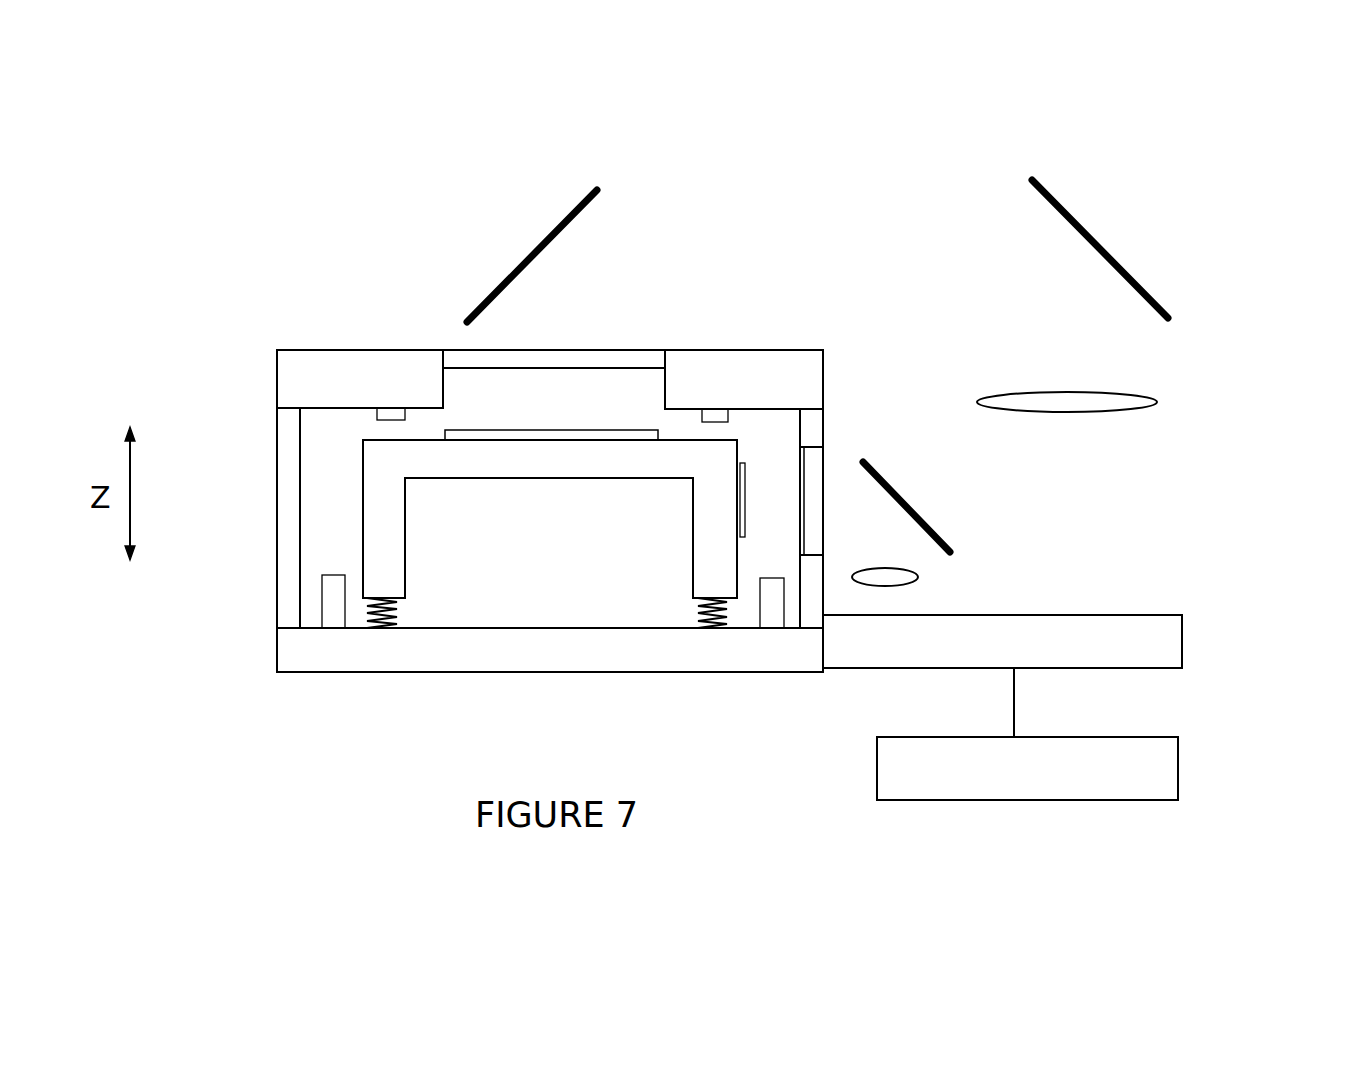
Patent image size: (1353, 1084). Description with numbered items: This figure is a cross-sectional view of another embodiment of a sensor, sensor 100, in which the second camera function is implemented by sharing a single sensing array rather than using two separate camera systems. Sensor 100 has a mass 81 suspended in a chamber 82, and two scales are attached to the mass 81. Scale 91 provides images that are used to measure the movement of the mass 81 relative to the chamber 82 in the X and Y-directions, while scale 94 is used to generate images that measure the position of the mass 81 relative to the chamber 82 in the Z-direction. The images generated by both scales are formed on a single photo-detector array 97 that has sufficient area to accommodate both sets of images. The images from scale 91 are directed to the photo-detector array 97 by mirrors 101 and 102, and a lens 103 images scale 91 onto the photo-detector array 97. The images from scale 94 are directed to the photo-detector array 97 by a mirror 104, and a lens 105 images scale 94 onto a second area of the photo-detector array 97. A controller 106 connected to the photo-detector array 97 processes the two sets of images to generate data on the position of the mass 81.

The sensor 100 is at (199, 275).
The chamber 82 is at (323, 542).
The mass 81 is at (650, 468).
The scale 91 is at (498, 440).
The scale 94 is at (748, 470).
The photo-detector array 97 is at (1180, 620).
The mirror 101 is at (547, 233).
The mirror 102 is at (1093, 237).
The lens 103 is at (1157, 402).
The mirror 104 is at (885, 477).
The lens 105 is at (918, 577).
The controller 106 is at (1083, 800).